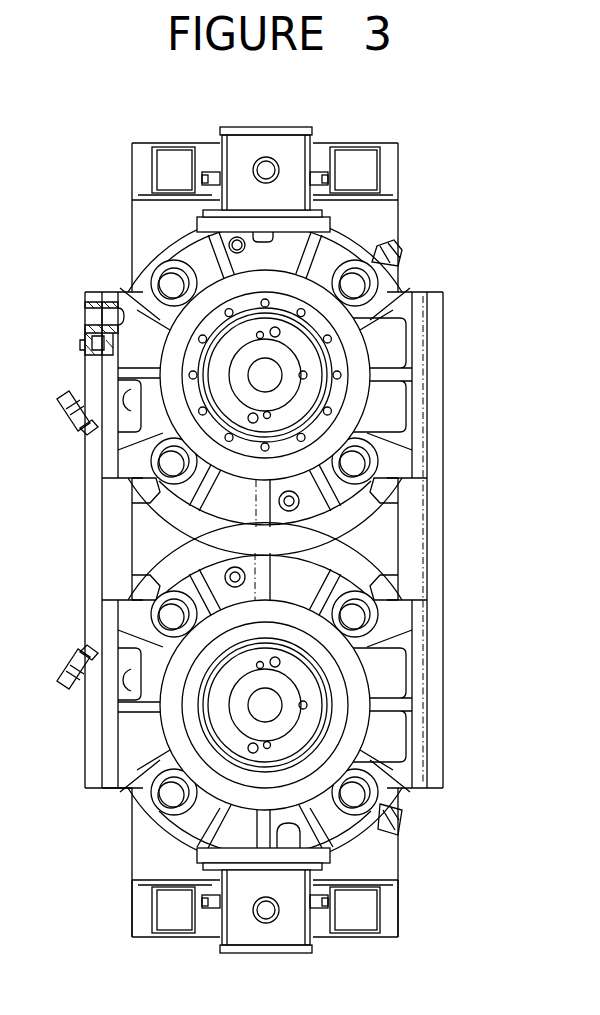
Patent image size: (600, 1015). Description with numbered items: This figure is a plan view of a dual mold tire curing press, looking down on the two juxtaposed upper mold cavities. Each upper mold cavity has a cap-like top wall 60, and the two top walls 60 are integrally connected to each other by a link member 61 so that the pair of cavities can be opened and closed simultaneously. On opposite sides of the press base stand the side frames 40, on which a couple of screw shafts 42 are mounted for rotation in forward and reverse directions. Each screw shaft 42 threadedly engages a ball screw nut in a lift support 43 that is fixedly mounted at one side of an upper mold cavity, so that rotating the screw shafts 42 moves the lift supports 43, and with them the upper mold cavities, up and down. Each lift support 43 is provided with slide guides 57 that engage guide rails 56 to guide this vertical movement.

The side frame 40 is at (380, 160).
The screw shaft 42 is at (263, 163).
The lift support 43 is at (291, 127).
The guide rail 56 is at (196, 182).
The slide guide 57 is at (213, 177).
The top wall 60 is at (382, 292).
The link member 61 is at (96, 520).